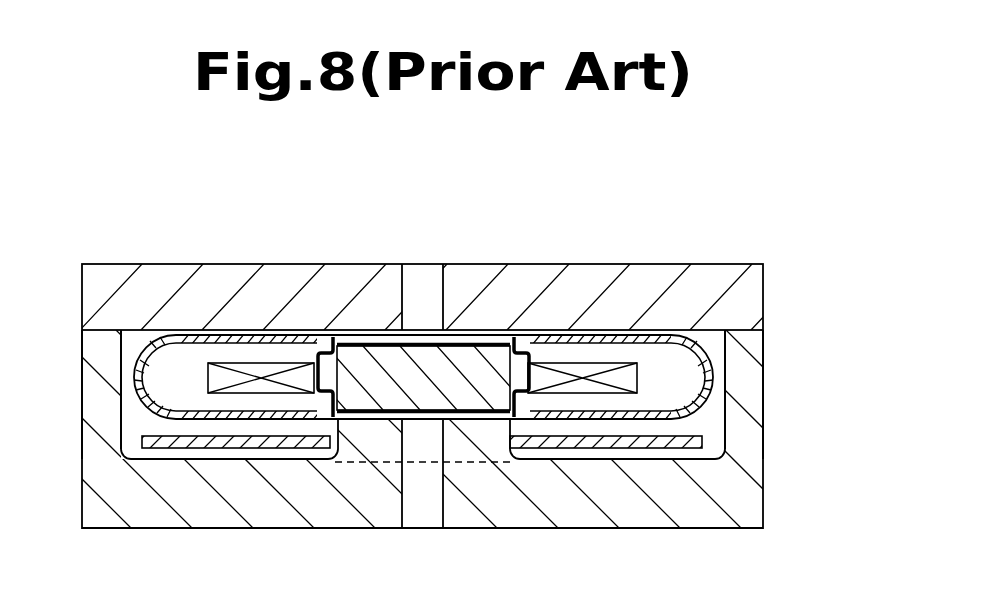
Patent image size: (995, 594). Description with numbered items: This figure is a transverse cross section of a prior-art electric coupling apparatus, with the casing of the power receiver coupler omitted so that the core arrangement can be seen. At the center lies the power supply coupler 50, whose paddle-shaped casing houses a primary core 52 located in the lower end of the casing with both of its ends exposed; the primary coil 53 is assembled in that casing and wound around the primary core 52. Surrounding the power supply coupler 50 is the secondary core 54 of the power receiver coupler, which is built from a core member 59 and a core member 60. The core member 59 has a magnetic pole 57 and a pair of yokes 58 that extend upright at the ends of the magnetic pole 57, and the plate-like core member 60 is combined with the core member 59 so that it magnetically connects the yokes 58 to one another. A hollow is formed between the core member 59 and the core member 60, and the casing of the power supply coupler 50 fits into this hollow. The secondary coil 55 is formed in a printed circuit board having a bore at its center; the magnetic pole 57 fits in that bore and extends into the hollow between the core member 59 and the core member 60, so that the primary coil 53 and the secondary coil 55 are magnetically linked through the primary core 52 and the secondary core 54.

The power supply coupler 50 is at (137, 400).
The primary core 52 is at (370, 360).
The primary coil 53 is at (637, 378).
The secondary core 54 is at (459, 357).
The secondary coil 55 is at (740, 467).
The magnetic pole 57 is at (405, 447).
The yokes 58 is at (97, 368).
The core member 59 is at (481, 410).
The core member 60 is at (763, 302).